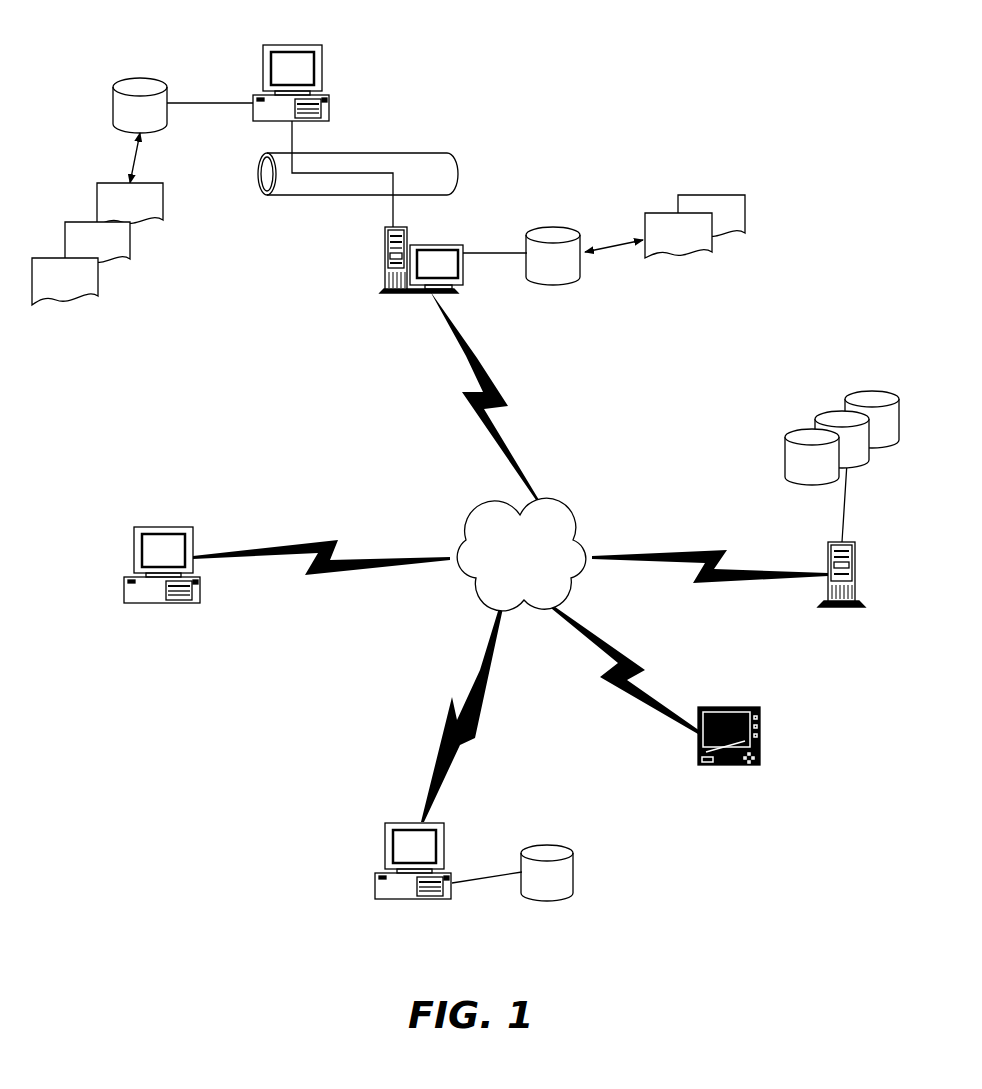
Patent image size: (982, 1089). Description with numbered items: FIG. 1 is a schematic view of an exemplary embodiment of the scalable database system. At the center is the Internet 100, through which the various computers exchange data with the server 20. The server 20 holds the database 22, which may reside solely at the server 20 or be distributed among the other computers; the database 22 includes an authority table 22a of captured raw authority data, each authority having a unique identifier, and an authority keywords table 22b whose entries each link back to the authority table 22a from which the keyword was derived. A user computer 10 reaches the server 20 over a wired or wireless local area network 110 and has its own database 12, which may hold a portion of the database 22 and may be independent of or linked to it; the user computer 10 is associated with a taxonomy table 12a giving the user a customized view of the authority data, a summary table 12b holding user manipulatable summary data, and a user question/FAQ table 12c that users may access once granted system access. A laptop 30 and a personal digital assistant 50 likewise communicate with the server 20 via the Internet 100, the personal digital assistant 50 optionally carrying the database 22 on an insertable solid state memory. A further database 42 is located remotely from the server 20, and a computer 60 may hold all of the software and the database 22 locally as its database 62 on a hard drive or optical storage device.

The user computer 10 is at (322, 47).
The database 12 is at (113, 100).
The taxonomy table 12a is at (98, 297).
The summary table 12b is at (130, 255).
The user question/FAQ table 12c is at (163, 212).
The local area network 110 is at (453, 165).
The server 20 is at (387, 300).
The database 22 is at (553, 282).
The authority table 22a is at (703, 255).
The authority keywords table 22b is at (745, 203).
The Internet 100 is at (478, 597).
The laptop 30 is at (125, 588).
The database 42 is at (785, 450).
The personal digital assistant 50 is at (737, 765).
The computer 60 is at (375, 885).
The database 62 is at (548, 898).